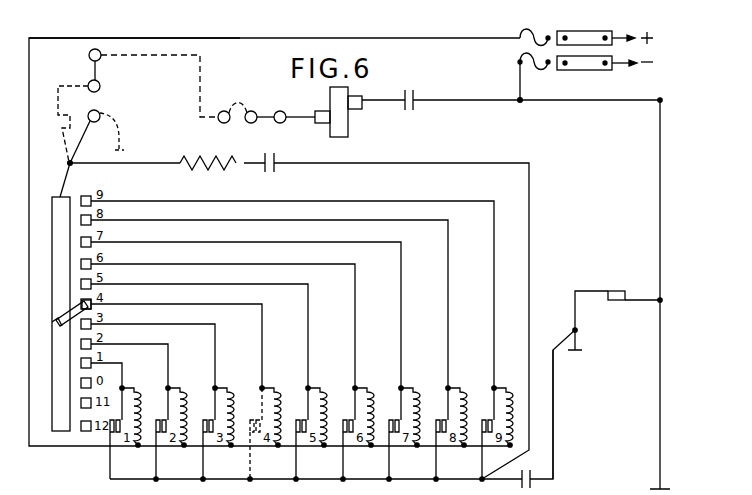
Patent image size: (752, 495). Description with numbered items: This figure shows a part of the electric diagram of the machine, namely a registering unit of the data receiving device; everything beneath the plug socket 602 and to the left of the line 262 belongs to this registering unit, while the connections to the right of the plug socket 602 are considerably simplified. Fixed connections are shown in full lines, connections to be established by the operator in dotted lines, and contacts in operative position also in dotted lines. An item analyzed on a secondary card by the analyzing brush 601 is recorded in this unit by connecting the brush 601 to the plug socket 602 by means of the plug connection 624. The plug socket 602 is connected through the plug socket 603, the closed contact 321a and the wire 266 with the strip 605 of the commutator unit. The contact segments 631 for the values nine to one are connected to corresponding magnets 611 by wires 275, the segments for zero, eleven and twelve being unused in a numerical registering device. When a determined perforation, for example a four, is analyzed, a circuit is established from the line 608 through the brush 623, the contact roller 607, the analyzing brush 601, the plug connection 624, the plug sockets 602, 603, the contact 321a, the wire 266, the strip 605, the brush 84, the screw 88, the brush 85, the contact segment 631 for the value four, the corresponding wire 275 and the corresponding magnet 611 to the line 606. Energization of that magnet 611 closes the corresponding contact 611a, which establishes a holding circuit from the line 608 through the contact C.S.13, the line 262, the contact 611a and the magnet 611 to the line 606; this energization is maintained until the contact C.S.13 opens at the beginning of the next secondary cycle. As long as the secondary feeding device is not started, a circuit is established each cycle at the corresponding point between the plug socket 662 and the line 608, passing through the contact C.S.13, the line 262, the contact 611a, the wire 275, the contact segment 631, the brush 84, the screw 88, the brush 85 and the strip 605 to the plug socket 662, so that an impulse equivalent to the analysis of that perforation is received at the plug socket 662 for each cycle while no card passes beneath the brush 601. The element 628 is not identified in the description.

The plug socket 602 is at (100, 59).
The plug socket 603 is at (88, 83).
The plug socket 662 is at (99, 113).
The plug connection 624 is at (200, 78).
The connection 628 is at (122, 143).
The line 606 is at (241, 40).
The contact roller 607 is at (332, 105).
The analyzing brush 601 is at (323, 124).
The brush 623 is at (356, 110).
The line 608 is at (518, 99).
The contact 321a is at (67, 141).
The wire 266 is at (68, 166).
The strip 605 is at (66, 198).
The contact segments 631 is at (92, 262).
The wires 275 is at (157, 241).
The brush 84 is at (62, 304).
The screw 88 is at (57, 321).
The brush 85 is at (92, 305).
The contact 611a is at (157, 433).
The magnet 611 is at (210, 447).
The contact CS13 C.S.13 is at (610, 301).
The line 262 is at (553, 443).